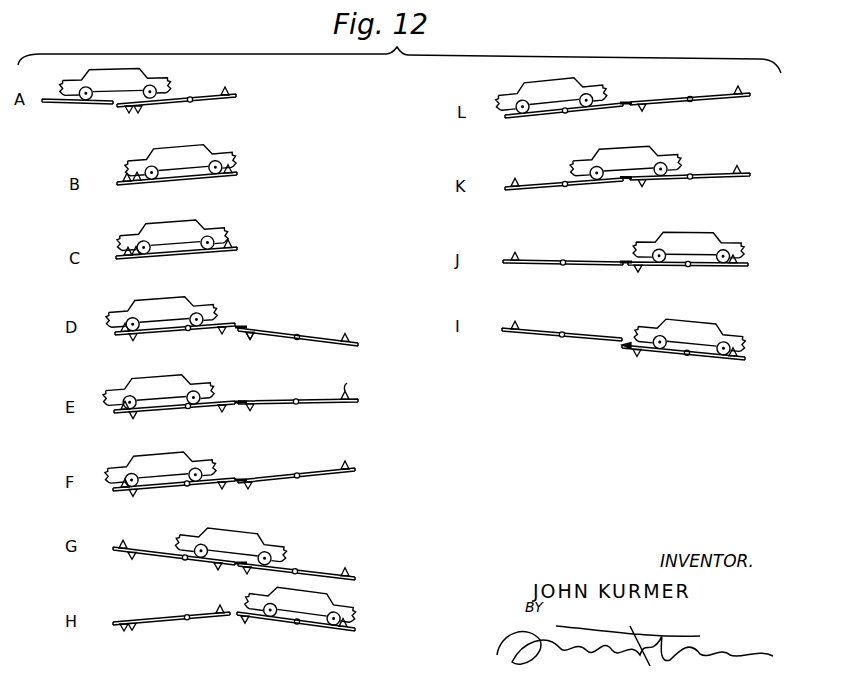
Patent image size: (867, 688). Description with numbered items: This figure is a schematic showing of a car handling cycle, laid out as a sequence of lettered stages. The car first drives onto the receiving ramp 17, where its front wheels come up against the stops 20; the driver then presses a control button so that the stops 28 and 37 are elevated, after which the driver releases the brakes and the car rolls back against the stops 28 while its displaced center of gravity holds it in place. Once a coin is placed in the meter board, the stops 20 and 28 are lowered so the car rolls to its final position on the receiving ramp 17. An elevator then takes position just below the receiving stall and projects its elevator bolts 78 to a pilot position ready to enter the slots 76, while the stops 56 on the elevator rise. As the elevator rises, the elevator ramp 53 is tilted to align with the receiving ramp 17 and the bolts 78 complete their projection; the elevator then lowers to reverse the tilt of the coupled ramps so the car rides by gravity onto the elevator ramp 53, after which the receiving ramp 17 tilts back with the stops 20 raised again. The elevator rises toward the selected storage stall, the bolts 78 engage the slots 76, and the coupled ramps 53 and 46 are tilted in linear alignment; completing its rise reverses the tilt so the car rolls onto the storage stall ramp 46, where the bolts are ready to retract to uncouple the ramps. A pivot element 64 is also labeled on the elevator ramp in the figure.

The stops 20 is at (222, 87).
The receiving ramp 17 is at (195, 101).
The stops 37 is at (127, 182).
The stops 28 is at (138, 181).
The slots 76 is at (241, 326).
The elevator bolts 78 is at (239, 330).
The pivot support 64 is at (248, 336).
The elevator ramp 53 is at (276, 333).
The stops 56 is at (343, 334).
The storage stall ramp 46 is at (575, 188).